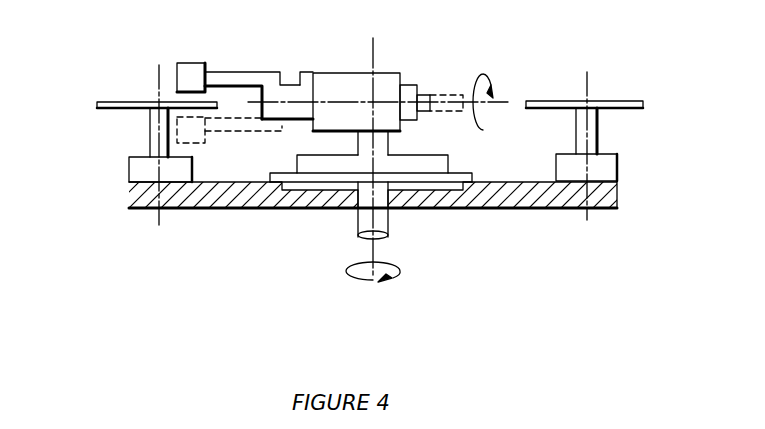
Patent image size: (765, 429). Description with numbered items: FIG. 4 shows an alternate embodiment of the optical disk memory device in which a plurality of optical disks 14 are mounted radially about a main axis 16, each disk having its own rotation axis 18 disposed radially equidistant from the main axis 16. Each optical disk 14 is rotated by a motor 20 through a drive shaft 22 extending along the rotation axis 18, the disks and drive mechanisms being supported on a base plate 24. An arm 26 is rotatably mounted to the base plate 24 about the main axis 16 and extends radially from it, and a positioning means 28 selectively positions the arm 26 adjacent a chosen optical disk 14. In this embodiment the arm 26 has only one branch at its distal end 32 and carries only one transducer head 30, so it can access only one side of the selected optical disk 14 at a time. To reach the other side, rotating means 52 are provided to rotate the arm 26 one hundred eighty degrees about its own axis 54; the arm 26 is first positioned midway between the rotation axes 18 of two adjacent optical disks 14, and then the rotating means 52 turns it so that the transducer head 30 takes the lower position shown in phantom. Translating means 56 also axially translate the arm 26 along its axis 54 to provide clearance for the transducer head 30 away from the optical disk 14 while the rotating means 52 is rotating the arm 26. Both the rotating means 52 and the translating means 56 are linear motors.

The optical disk 14 is at (117, 100).
The main axis 16 is at (374, 50).
The rotation axis 18 is at (157, 80).
The motor 20 is at (135, 168).
The drive shaft 22 is at (150, 135).
The base plate 24 is at (517, 209).
The arm 26 is at (293, 95).
The means for selectively positioning arm 28 is at (407, 153).
The transducer head 30 is at (185, 63).
The distal end 32 is at (272, 95).
The rotating means 52 is at (380, 72).
The arm axis 54 is at (468, 98).
The translating means 56 is at (407, 88).